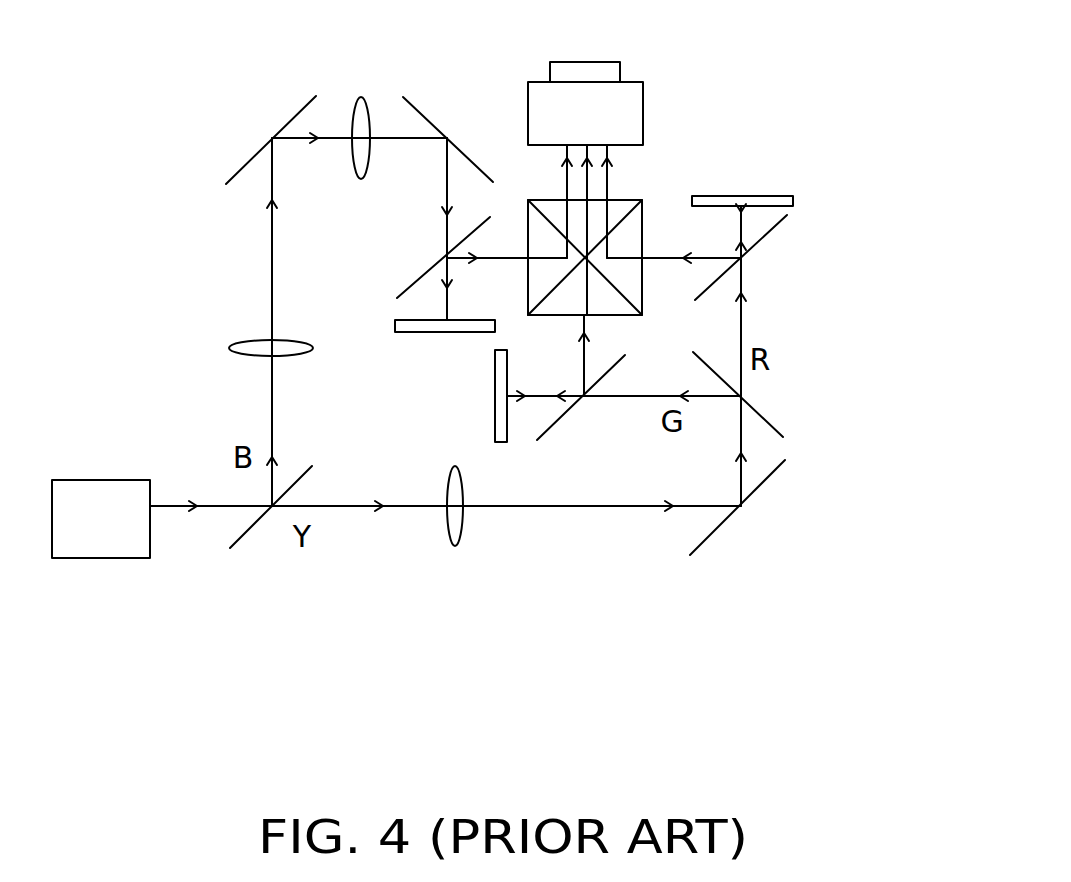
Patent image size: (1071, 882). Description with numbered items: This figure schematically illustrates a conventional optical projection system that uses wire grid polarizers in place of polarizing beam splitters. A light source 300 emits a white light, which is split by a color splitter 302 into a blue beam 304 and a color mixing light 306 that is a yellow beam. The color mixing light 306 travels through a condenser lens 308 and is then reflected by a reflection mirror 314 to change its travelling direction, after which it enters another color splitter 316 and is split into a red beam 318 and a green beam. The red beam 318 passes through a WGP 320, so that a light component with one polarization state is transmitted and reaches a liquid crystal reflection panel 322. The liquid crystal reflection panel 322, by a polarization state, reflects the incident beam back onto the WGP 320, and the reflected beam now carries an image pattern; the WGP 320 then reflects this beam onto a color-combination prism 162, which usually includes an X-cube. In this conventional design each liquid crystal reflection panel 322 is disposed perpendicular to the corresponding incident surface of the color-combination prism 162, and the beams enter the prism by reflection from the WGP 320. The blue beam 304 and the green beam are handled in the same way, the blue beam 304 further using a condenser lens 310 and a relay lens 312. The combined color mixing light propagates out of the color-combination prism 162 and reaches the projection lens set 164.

The color-combination prism 162 is at (607, 200).
The projection lens set 164 is at (643, 116).
The light source 300 is at (90, 480).
The color splitter 302 is at (248, 530).
The blue beam 304 is at (273, 403).
The color mixing light 306 is at (330, 510).
The condenser lens 308 is at (460, 540).
The condenser lens 310 is at (238, 340).
The relay lens 312 is at (365, 100).
The reflection mirror 314 is at (306, 110).
The color splitter 316 is at (447, 135).
The red beam 318 is at (742, 318).
The wire grid polarizer (WGP) 320 is at (430, 270).
The liquid crystal reflection panel 322 is at (746, 196).